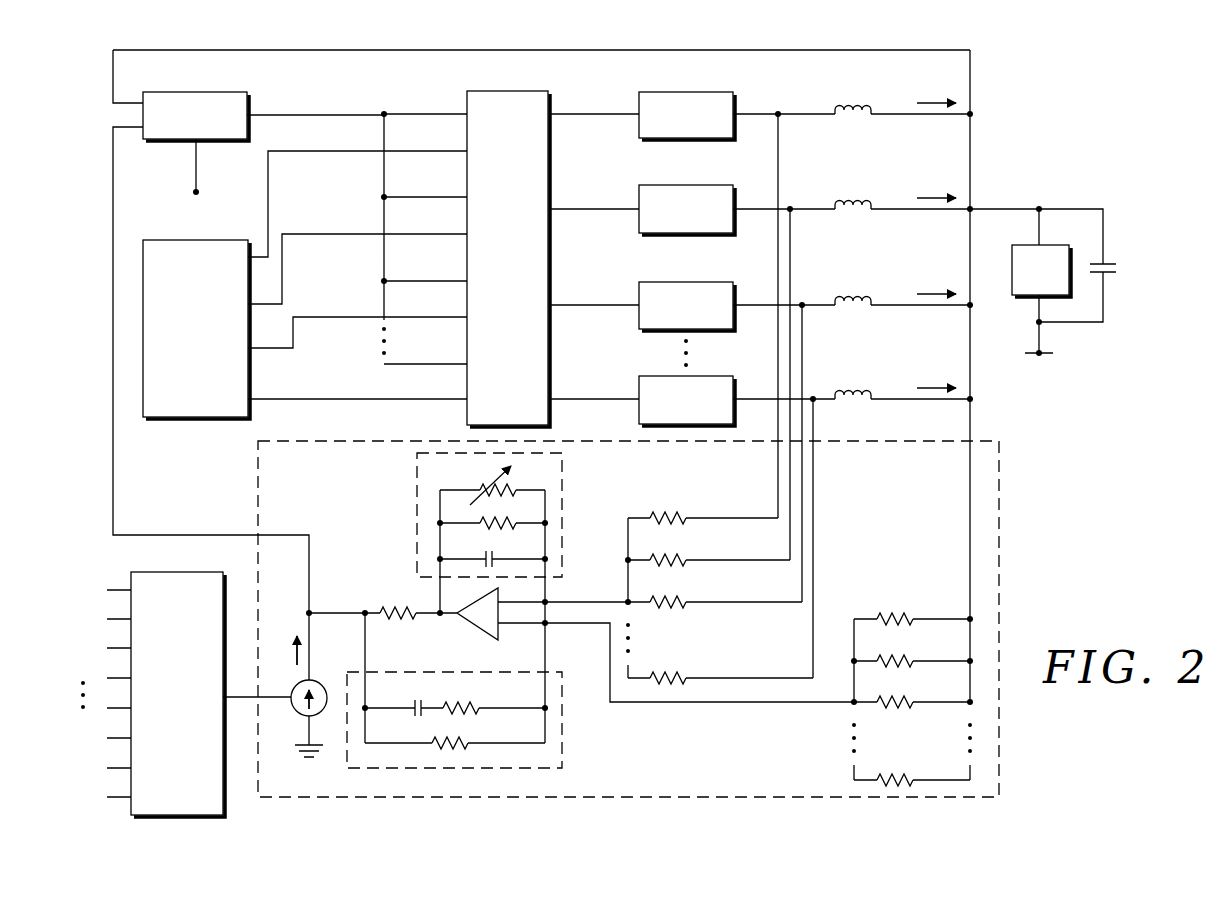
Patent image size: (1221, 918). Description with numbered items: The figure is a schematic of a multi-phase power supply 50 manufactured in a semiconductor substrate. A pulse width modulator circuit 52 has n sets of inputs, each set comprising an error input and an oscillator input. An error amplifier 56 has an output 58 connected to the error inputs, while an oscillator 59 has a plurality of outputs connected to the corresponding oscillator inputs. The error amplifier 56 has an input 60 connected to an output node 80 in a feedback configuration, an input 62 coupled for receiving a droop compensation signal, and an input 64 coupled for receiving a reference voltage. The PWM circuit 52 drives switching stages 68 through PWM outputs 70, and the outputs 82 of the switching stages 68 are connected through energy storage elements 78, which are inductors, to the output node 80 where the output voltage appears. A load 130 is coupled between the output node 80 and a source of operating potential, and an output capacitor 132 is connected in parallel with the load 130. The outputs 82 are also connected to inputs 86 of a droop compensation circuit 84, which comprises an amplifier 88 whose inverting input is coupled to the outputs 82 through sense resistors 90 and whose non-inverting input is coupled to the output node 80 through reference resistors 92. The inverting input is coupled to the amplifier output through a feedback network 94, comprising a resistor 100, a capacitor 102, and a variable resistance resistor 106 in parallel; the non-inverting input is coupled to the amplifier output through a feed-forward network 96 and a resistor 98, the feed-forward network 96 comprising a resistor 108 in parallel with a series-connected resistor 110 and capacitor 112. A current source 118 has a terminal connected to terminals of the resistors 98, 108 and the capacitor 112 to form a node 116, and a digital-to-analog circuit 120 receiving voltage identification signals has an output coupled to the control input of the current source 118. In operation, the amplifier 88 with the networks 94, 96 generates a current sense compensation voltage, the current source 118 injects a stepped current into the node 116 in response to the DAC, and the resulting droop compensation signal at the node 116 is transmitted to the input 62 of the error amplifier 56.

The power supply 50 is at (1115, 728).
The pulse width modulator circuit 52 is at (520, 91).
The error amplifier 56 is at (218, 92).
The output 58 is at (353, 112).
The oscillator 59 is at (208, 420).
The input 60 is at (114, 78).
The input 62 is at (114, 168).
The input 64 is at (200, 192).
The switching stages 68 is at (663, 92).
The PWM outputs 70 is at (598, 110).
The energy storage elements 78 is at (858, 104).
The output node 80 is at (972, 207).
The outputs 82 is at (750, 110).
The droop compensation circuit 84 is at (1000, 582).
The inputs 86 is at (730, 518).
The amplifier 88 is at (489, 640).
The sense resistors 90 is at (670, 512).
The reference resistors 92 is at (896, 614).
The feedback network 94 is at (562, 490).
The feed-forward network 96 is at (560, 710).
The resistor 98 is at (398, 623).
The resistor 100 is at (493, 519).
The capacitor 102 is at (483, 556).
The variable resistance resistor 106 is at (481, 486).
The resistor 108 is at (456, 740).
The resistor 110 is at (468, 703).
The capacitor 112 is at (416, 702).
The node 116 is at (363, 615).
The current source 118 is at (296, 712).
The digital-to-analog circuit 120 is at (203, 572).
The load 130 is at (1019, 299).
The output capacitor 132 is at (1110, 263).